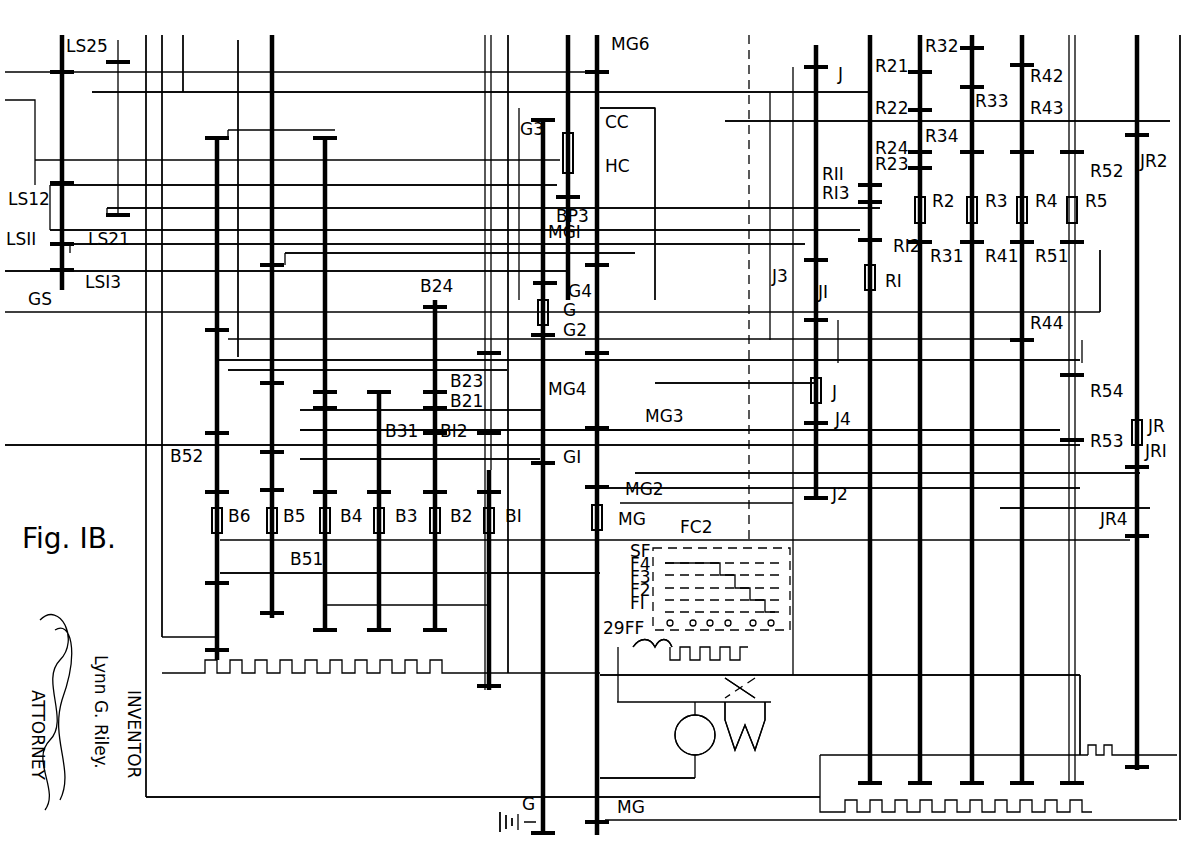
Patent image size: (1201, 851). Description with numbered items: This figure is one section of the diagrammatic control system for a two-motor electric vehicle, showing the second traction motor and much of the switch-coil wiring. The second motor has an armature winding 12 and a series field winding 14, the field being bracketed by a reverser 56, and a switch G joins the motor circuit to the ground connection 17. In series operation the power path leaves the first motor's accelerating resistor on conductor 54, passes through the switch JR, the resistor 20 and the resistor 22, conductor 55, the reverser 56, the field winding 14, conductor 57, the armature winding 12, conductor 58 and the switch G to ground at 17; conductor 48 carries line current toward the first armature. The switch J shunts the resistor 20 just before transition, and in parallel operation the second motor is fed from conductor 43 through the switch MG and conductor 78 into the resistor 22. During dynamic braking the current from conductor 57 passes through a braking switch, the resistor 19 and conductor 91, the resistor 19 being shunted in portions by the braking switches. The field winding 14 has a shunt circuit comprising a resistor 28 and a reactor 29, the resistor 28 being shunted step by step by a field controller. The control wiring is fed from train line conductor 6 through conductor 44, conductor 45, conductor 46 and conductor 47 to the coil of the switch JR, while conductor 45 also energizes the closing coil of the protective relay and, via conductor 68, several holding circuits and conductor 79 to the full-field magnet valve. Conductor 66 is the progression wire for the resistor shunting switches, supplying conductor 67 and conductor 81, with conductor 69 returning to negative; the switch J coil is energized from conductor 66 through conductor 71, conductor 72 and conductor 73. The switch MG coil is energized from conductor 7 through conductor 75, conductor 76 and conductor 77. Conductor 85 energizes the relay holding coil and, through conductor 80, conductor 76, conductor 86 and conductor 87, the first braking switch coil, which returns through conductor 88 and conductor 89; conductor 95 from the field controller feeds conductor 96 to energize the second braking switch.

The conductor 85 is at (32, 166).
The conductor 81 is at (190, 45).
The conductor 66 is at (183, 82).
The conductor 86 is at (238, 75).
The conductor 95 is at (510, 72).
The conductor 45 is at (656, 170).
The conductor 80 is at (423, 186).
The conductor 67 is at (388, 208).
The conductor 68 is at (388, 230).
The conductor 6 is at (14, 271).
The conductor 44 is at (135, 260).
The conductor 43 is at (478, 308).
The conductor 91 is at (163, 388).
The conductor 7 is at (40, 444).
The conductor 76 is at (628, 322).
The conductor 73 is at (740, 383).
The conductor 46 is at (727, 430).
The conductor 47 is at (962, 430).
The conductor 48 is at (143, 566).
The conductor 87 is at (478, 475).
The conductor 88 is at (492, 556).
The conductor 89 is at (558, 687).
The conductor 57 is at (580, 673).
The reverser 56 is at (760, 688).
The conductor 58 is at (637, 780).
The conductor 78 is at (787, 798).
The conductor 55 is at (1081, 688).
The resistor 20 is at (1094, 750).
The resistor 22 is at (1094, 806).
The resistor 19 is at (328, 666).
The ground connection 17 is at (490, 818).
The armature winding 12 is at (672, 730).
The series field winding 14 is at (753, 736).
The resistor 28 is at (737, 655).
The reactor 29 is at (633, 647).
The conductor 69 is at (1102, 296).
The conductor 71 is at (1082, 343).
The conductor 72 is at (960, 363).
The conductor 75 is at (1080, 481).
The conductor 77 is at (1132, 510).
The conductor 79 is at (1160, 68).
The conductor 54 is at (1178, 100).
The conductor 96 is at (448, 426).